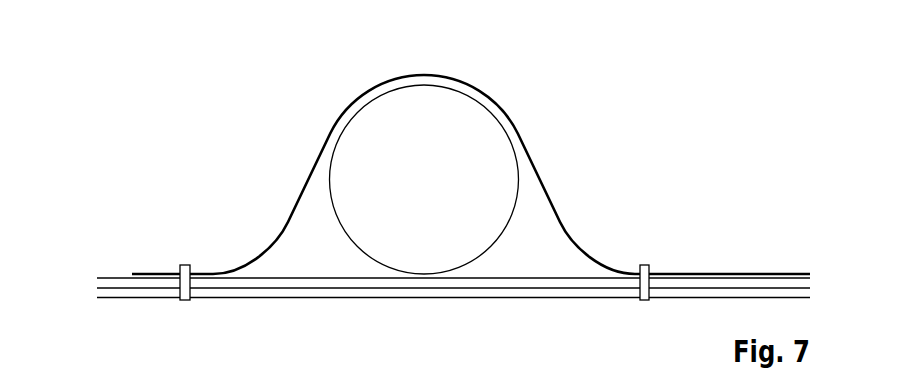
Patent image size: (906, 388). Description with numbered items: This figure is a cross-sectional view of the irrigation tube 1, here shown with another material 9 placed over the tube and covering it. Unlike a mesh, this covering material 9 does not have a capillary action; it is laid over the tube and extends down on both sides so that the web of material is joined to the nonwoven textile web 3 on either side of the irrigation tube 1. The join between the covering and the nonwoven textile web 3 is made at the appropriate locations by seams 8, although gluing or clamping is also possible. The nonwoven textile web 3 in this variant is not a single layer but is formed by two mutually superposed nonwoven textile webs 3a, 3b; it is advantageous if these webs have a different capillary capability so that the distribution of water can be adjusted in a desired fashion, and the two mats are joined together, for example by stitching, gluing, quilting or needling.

The irrigation tube 1 is at (518, 163).
The holding sheet 9 is at (497, 98).
The nonwoven textile web 3 is at (432, 278).
The nonwoven textile web 3a is at (117, 283).
The nonwoven textile web 3b is at (130, 293).
The seams 8 is at (183, 270).